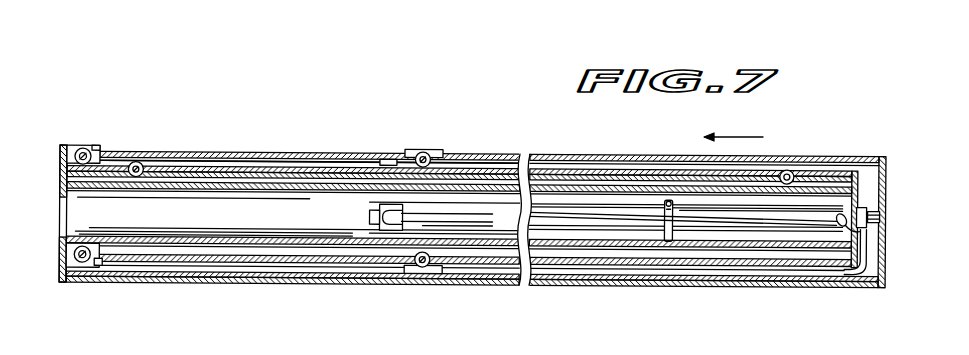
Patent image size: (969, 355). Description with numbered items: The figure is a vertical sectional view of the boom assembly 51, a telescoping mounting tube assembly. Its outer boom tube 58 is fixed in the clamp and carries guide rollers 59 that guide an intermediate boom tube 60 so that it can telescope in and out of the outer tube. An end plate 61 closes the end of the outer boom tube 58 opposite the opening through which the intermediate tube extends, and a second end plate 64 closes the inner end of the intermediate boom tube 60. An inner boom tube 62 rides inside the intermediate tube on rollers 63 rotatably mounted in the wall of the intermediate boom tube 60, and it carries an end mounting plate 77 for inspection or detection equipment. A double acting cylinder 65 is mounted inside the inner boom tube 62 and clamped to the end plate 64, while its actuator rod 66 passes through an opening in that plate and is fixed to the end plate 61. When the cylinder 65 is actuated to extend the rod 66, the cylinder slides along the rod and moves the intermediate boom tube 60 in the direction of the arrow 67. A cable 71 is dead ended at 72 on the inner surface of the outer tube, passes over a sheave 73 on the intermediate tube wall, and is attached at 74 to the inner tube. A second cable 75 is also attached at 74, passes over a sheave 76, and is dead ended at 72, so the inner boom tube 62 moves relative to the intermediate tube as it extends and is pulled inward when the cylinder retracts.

The boom assembly 51 is at (604, 293).
The outer boom tube 58 is at (617, 158).
The guide rollers 59 is at (81, 148).
The intermediate boom tube 60 is at (252, 170).
The end plate 61 is at (887, 173).
The inner boom tube 62 is at (237, 246).
The rollers 63 is at (423, 266).
The end plate 64 is at (858, 175).
The cylinder 65 is at (811, 221).
The actuator rod 66 is at (873, 229).
The arrow 67 is at (742, 137).
The cable 71 is at (208, 160).
The dead end attachment 72 is at (386, 156).
The sheave 73 is at (138, 161).
The cable attachment 74 is at (556, 187).
The second cable 75 is at (477, 161).
The sheave 76 is at (789, 171).
The end mounting plate 77 is at (62, 268).